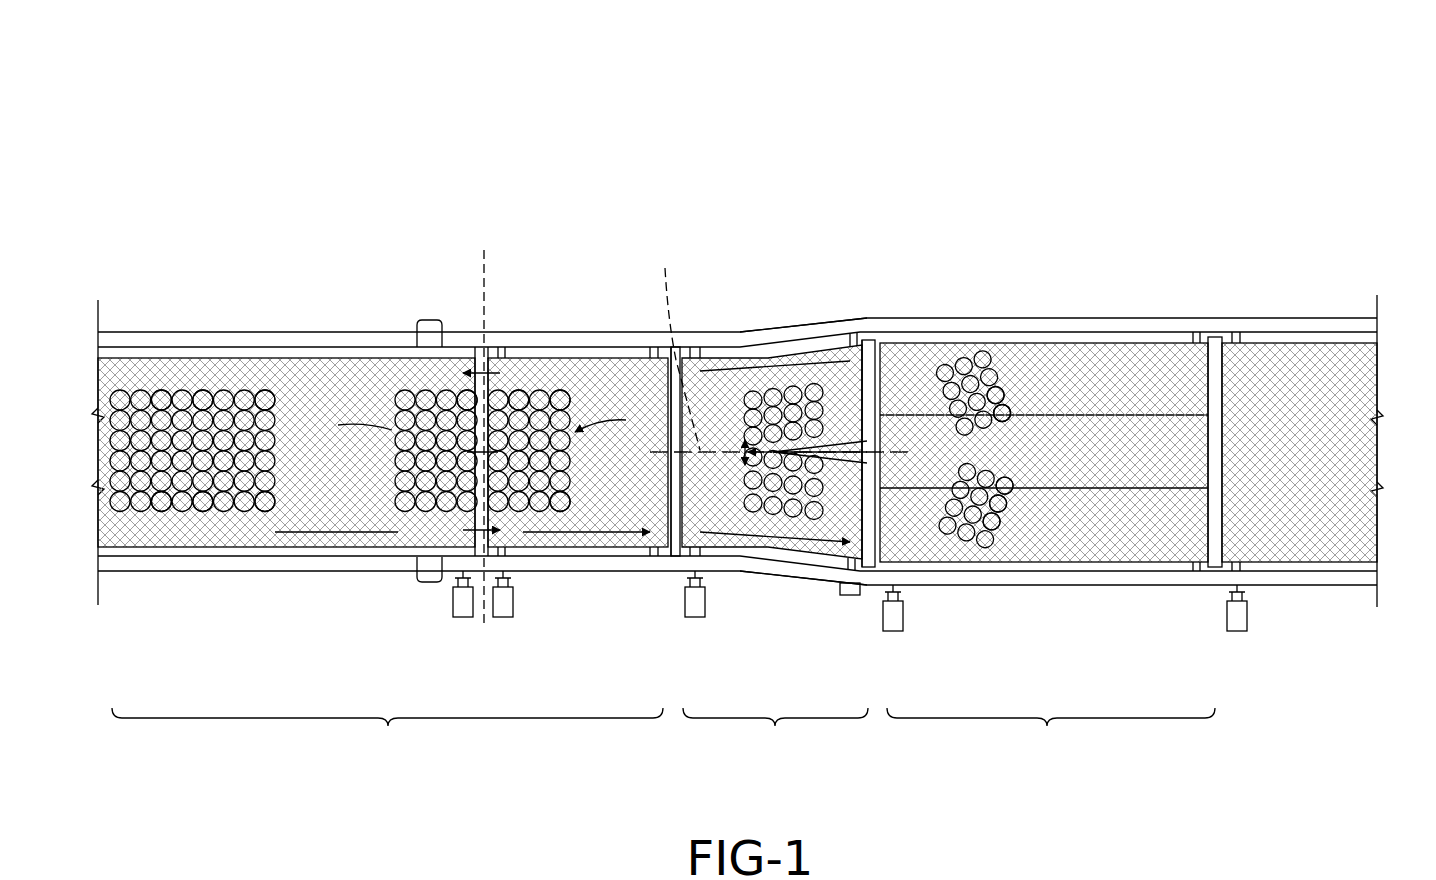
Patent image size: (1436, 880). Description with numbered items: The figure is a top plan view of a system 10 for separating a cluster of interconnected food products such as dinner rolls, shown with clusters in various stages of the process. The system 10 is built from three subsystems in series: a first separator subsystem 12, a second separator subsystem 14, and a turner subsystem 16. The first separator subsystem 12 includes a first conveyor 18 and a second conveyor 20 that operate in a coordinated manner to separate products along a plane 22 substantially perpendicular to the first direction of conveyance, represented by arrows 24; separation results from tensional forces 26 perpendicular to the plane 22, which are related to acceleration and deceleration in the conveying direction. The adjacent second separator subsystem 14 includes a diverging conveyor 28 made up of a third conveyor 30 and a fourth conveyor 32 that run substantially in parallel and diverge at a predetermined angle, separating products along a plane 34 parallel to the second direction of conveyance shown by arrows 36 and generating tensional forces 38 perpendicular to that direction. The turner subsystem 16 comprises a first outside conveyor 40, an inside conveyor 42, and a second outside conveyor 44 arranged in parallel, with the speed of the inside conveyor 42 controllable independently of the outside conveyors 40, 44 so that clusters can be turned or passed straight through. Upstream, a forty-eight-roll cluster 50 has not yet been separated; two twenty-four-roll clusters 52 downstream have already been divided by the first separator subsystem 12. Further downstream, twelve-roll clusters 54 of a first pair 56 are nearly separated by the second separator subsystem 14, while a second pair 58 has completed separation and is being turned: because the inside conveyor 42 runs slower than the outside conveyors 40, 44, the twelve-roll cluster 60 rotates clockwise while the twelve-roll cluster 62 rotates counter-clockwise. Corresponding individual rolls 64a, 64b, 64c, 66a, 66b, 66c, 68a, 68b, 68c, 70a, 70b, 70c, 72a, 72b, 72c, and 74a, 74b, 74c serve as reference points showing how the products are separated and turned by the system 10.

The system 10 is at (150, 165).
The first separator subsystem 12 is at (387, 735).
The second separator subsystem 14 is at (775, 735).
The turner subsystem 16 is at (1051, 735).
The first conveyor 18 is at (286, 452).
The second conveyor 20 is at (578, 452).
The plane 22 is at (484, 250).
The arrows 24 is at (345, 536).
The tensional forces 26 is at (470, 372).
The diverging conveyor 28 is at (723, 413).
The third conveyor 30 is at (855, 387).
The fourth conveyor 32 is at (847, 522).
The plane 34 is at (676, 344).
The arrows 36 is at (750, 370).
The tensional forces 38 is at (747, 457).
The first outside conveyor 40 is at (1044, 391).
The inside conveyor 42 is at (1044, 452).
The second outside conveyor 44 is at (1044, 512).
The 48-roll cluster 50 is at (132, 378).
The 24-roll clusters 52 is at (482, 421).
The 12-roll clusters 54 is at (783, 380).
The first 12-roll cluster pair 56 is at (838, 407).
The second 12-roll cluster pair 58 is at (1013, 400).
The 12-roll cluster 60 is at (1003, 388).
The 12-roll cluster 62 is at (1000, 523).
The individual food product 64a is at (160, 392).
The individual food product 64b is at (462, 372).
The individual food product 64c is at (845, 388).
The individual food product 66a is at (160, 509).
The individual food product 66b is at (466, 510).
The individual food product 66c is at (815, 525).
The individual food product 68a is at (205, 392).
The individual food product 68b is at (515, 392).
The individual food product 68c is at (965, 360).
The individual food product 70a is at (263, 392).
The individual food product 70b is at (565, 392).
The individual food product 70c is at (1010, 408).
The individual food product 72a is at (268, 509).
The individual food product 72b is at (572, 510).
The individual food product 72c is at (1010, 495).
The individual food product 74a is at (208, 509).
The individual food product 74b is at (505, 510).
The individual food product 74c is at (970, 550).